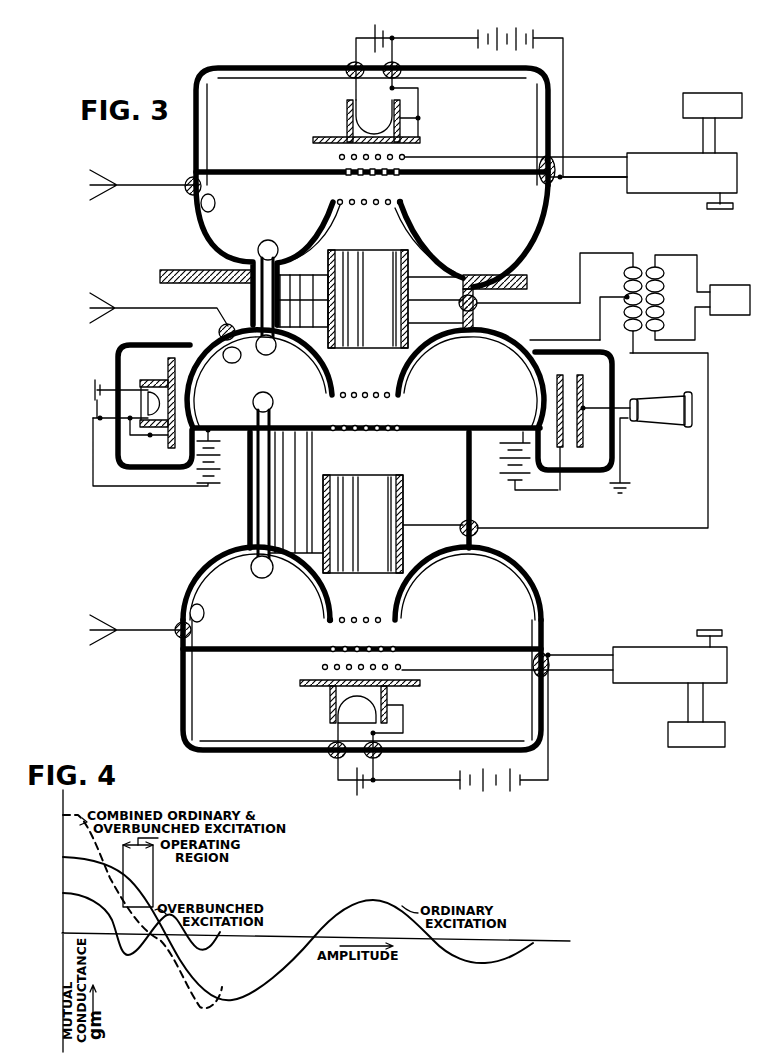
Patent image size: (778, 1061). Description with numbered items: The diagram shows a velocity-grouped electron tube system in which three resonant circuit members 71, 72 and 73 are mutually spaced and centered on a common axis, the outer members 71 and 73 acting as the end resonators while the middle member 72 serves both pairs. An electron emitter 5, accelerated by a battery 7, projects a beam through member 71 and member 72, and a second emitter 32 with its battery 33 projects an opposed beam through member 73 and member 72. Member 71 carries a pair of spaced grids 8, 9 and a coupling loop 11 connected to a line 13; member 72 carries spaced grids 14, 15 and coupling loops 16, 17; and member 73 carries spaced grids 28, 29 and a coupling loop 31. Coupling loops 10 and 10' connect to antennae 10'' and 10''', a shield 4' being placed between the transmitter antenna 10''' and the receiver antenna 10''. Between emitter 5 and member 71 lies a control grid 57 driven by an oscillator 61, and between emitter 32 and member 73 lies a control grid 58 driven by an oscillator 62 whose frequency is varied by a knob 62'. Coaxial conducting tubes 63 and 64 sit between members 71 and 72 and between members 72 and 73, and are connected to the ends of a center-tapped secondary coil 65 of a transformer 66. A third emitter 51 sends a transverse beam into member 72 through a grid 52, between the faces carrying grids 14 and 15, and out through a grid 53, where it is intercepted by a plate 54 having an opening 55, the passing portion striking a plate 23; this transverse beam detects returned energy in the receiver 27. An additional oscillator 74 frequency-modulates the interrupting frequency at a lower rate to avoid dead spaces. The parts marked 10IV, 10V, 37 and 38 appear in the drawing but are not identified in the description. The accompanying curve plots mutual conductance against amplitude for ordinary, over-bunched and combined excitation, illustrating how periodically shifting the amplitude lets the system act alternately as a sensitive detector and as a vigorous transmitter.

The shield 4' is at (194, 280).
The electron emitter 5 is at (352, 141).
The battery 7 is at (514, 32).
The grid 8 is at (393, 176).
The grid 9 is at (346, 200).
The coupling loop 10 is at (220, 209).
The coupling loop 10' is at (238, 358).
The antenna 10'' is at (141, 172).
The antenna 10''' is at (151, 297).
The input lead 10IV is at (88, 632).
The glass bead seal 10V is at (204, 617).
The coupling loop 11 is at (259, 246).
The line 13 is at (370, 299).
The grid 14 is at (386, 399).
The grid 15 is at (346, 424).
The coupling loop 16 is at (275, 350).
The coupling loop 17 is at (275, 397).
The plate 23 is at (592, 372).
The receiver 27 is at (680, 395).
The grid 28 is at (345, 646).
The grid 29 is at (370, 623).
The coupling loop 31 is at (271, 572).
The electron emitter 32 is at (300, 680).
The battery 33 is at (510, 794).
The battery 37 is at (500, 470).
The battery 38 is at (214, 462).
The electron emitter 51 is at (168, 372).
The grid 52 is at (194, 405).
The grid 53 is at (532, 408).
The plate 54 is at (559, 376).
The opening 55 is at (562, 450).
The control grid 57 is at (338, 158).
The control grid 58 is at (403, 670).
The oscillator 61 is at (627, 158).
The oscillator 62 is at (564, 653).
The knob 62' is at (702, 628).
The conducting tube 63 is at (497, 303).
The conducting tube 64 is at (324, 479).
The secondary coil 65 is at (624, 271).
The transformer 66 is at (660, 297).
The resonant circuit member 71 is at (200, 237).
The resonant circuit member 72 is at (219, 332).
The resonant circuit member 73 is at (193, 580).
The oscillator 74 is at (707, 93).